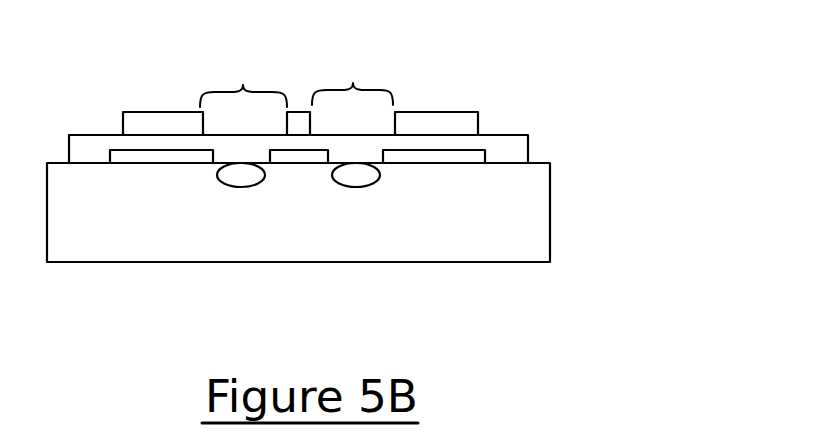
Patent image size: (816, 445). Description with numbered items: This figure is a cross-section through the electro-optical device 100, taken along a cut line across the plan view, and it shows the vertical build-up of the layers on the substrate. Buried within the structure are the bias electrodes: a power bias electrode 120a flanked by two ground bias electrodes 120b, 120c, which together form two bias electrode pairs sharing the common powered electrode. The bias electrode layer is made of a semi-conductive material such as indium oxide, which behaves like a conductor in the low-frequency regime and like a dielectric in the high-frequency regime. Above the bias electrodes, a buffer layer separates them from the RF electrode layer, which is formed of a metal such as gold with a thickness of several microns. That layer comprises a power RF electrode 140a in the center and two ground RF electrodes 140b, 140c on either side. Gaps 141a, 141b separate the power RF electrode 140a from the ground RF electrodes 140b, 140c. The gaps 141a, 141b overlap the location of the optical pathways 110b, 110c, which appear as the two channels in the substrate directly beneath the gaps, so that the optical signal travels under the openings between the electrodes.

The electro-optical device 100 is at (631, 90).
The optical pathway 110b is at (248, 173).
The optical pathway 110c is at (363, 177).
The power bias electrode 120a is at (312, 153).
The ground bias electrode 120b is at (462, 153).
The ground bias electrode 120c is at (155, 153).
The power RF electrode 140a is at (303, 123).
The ground RF electrode 140b is at (142, 123).
The ground RF electrode 140c is at (462, 123).
The gap 141a is at (243, 83).
The gap 141b is at (352, 85).